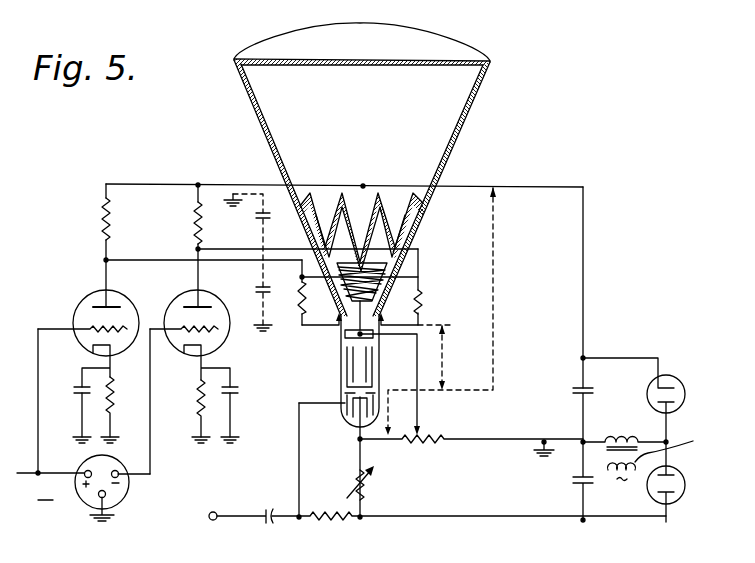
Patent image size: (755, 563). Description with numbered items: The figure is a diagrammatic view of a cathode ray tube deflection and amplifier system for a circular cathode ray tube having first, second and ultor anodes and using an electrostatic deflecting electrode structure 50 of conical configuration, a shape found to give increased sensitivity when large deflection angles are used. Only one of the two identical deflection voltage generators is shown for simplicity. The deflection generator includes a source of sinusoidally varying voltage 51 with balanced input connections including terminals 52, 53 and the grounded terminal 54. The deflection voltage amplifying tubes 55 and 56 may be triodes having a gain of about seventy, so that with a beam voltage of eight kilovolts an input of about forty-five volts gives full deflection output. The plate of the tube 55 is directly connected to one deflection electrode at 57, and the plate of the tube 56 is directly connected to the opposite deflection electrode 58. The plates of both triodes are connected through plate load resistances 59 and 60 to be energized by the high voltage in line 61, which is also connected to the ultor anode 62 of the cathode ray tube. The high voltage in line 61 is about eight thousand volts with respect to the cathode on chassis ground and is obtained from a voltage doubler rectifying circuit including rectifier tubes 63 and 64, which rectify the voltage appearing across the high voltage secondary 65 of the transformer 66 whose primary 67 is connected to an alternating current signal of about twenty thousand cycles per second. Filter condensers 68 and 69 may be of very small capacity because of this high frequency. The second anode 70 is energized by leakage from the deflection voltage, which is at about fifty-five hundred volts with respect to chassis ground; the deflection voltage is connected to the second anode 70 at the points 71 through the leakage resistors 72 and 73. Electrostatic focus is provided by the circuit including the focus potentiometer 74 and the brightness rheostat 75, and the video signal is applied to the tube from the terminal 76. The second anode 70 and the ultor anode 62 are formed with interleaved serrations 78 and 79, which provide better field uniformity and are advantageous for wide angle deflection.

The electrostatic deflecting electrode structure 50 is at (396, 262).
The source of sinusoidally varying voltage 51 is at (122, 496).
The terminal 52 is at (85, 471).
The terminal 53 is at (117, 471).
The grounded terminal 54 is at (99, 497).
The deflection voltage amplifying tube 55 is at (78, 303).
The deflection voltage amplifying tube 56 is at (175, 300).
The deflection electrode 57 is at (300, 277).
The opposite deflection electrode 58 is at (408, 277).
The plate load resistance 59 is at (102, 213).
The plate load resistance 60 is at (194, 223).
The high voltage line 61 is at (487, 186).
The ultor anode 62 is at (362, 169).
The rectifier tube 63 is at (685, 389).
The rectifier tube 64 is at (685, 483).
The high voltage secondary 65 is at (617, 435).
The transformer 66 is at (675, 445).
The primary 67 is at (613, 480).
The filter condenser 68 is at (572, 391).
The filter condenser 69 is at (573, 483).
The second anode 70 is at (327, 303).
The points 71 is at (338, 316).
The leakage resistor 72 is at (300, 300).
The leakage resistor 73 is at (423, 302).
The focus potentiometer 74 is at (426, 438).
The brightness rheostat 75 is at (352, 479).
The terminal 76 is at (216, 511).
The serrations 78 is at (330, 243).
The serrations 79 is at (395, 214).